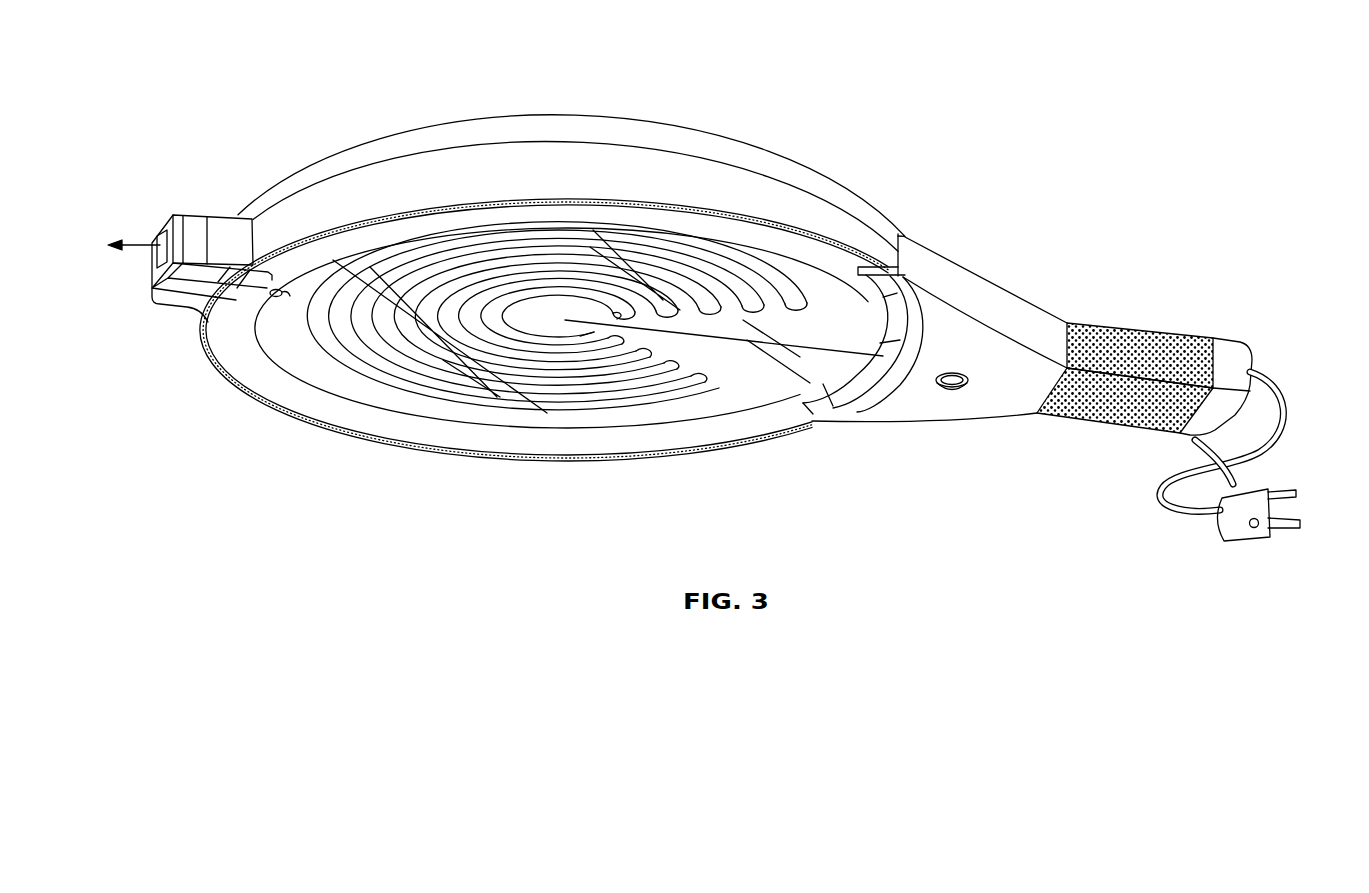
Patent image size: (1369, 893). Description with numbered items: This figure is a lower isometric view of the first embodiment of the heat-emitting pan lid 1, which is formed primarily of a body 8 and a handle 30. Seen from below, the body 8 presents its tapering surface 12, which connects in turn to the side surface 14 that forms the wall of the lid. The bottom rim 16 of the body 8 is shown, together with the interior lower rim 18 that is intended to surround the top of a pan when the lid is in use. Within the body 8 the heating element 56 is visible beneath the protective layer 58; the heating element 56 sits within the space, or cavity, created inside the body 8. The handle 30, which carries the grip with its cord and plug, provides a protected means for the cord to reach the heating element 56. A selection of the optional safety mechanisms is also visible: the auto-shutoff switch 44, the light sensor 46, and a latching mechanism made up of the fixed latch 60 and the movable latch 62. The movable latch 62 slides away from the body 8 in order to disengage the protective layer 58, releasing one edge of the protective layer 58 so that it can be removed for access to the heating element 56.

The heat-emitting pan lid 1 is at (1133, 72).
The body 8 is at (337, 144).
The tapering surface 12 is at (558, 122).
The side surface 14 is at (575, 197).
The bottom rim 16 is at (451, 456).
The interior lower rim 18 is at (550, 446).
The handle 30 is at (1013, 320).
The auto-shutoff switch 44 is at (952, 392).
The light sensor 46 is at (290, 300).
The heating element 56 is at (767, 272).
The protective layer 58 is at (680, 412).
The fixed latch 60 is at (890, 300).
The movable latch 62 is at (205, 292).